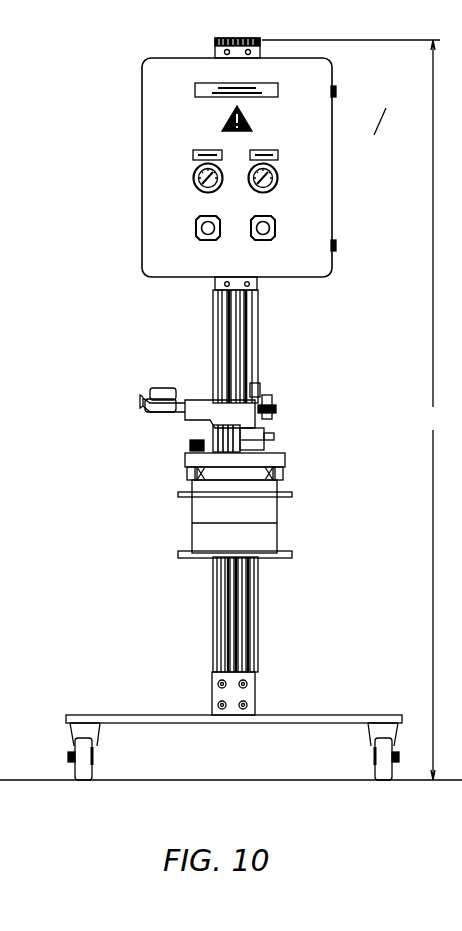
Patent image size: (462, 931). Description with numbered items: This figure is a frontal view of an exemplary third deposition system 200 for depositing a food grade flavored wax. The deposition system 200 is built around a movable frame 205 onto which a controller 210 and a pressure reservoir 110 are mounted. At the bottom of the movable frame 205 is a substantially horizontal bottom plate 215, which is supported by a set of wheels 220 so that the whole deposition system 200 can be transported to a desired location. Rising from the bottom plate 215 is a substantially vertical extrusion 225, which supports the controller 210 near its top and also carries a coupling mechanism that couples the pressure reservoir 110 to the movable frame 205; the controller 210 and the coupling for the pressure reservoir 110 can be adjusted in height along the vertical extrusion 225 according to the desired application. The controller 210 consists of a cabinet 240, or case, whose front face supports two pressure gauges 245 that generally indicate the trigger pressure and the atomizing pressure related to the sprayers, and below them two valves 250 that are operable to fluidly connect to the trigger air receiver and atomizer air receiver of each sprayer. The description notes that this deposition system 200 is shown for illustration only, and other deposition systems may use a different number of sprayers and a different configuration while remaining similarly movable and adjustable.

The deposition system 200 is at (175, 34).
The controller 210 is at (142, 152).
The cabinet 240 is at (330, 122).
The pressure gauges 245 is at (195, 186).
The valves 250 is at (198, 232).
The vertical extrusion 225 is at (259, 327).
The movable frame 205 is at (164, 627).
The bottom plate 215 is at (126, 714).
The wheels 220 is at (101, 752).
The pressure reservoir 110 is at (279, 509).